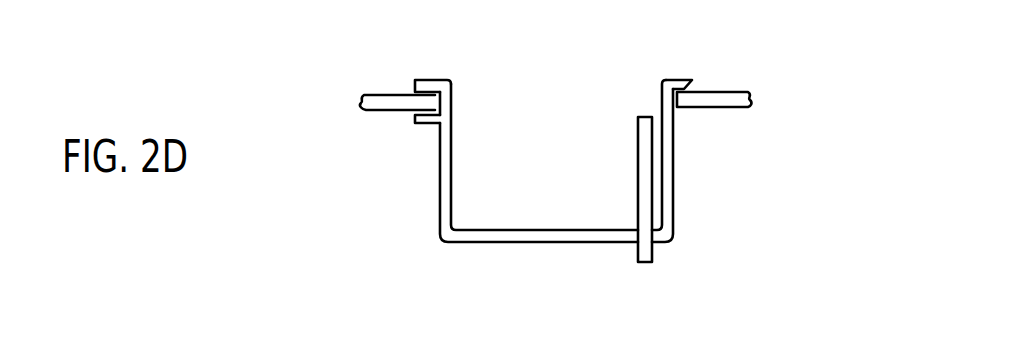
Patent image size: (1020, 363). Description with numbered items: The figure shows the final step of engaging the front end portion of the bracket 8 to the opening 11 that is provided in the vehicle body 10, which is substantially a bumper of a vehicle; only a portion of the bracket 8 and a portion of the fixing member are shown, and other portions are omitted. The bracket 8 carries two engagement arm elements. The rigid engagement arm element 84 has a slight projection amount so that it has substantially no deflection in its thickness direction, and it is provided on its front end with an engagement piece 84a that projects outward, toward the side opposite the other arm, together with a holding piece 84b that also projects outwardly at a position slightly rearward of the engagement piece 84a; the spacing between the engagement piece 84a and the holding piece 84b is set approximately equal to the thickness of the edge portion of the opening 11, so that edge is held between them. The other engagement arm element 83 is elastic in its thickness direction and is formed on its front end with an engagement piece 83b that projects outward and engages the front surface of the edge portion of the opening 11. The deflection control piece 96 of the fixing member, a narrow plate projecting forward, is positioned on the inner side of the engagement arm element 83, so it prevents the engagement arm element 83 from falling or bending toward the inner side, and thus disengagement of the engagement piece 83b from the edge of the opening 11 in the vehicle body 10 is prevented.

The bracket 8 is at (542, 242).
The vehicle body 10 is at (733, 92).
The opening 11 is at (653, 104).
The engagement arm element 83 is at (673, 185).
The engagement piece 83b is at (690, 79).
The engagement arm element 84 is at (440, 207).
The engagement piece 84a is at (428, 80).
The holding piece 84b is at (414, 122).
The deflection control piece 96 is at (638, 170).